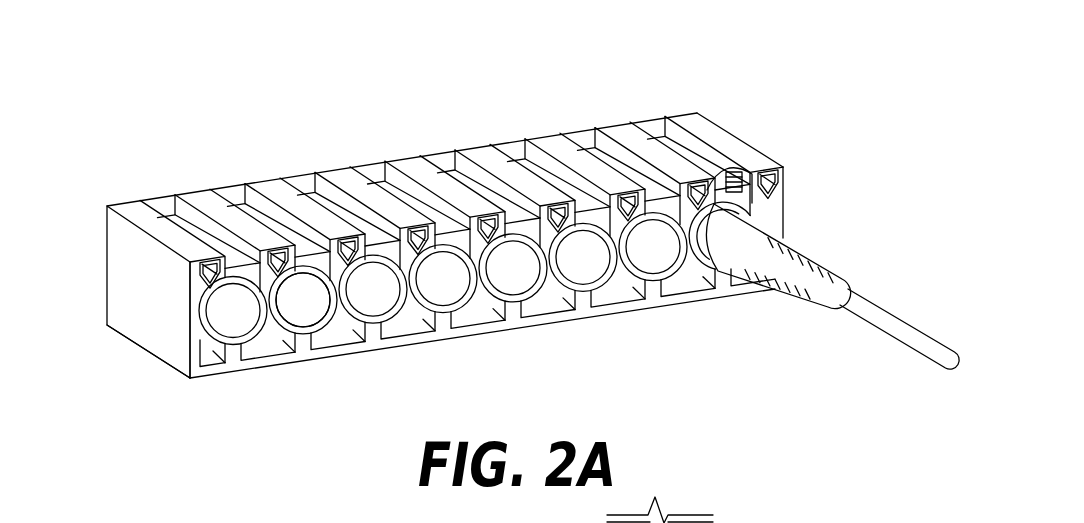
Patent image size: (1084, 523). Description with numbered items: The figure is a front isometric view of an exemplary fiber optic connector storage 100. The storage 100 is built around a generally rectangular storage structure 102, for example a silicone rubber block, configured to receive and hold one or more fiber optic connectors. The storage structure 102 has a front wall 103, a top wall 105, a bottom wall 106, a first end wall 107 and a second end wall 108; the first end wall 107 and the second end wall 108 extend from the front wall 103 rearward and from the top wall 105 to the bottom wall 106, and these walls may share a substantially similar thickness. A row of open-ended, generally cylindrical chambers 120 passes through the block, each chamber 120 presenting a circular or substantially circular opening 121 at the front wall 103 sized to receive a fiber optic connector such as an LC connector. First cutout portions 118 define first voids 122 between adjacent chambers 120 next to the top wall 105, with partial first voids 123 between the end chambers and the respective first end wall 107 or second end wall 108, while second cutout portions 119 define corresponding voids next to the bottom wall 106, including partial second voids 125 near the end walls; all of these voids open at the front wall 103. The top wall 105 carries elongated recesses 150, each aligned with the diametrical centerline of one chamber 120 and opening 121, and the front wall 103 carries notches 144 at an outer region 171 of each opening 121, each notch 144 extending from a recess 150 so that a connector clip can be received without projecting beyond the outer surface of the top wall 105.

The fiber optic connector storage 100 is at (610, 80).
The storage structure 102 is at (105, 213).
The front wall 103 is at (287, 367).
The top wall 105 is at (200, 200).
The bottom wall 106 is at (187, 386).
The first end wall 107 is at (113, 334).
The second end wall 108 is at (728, 133).
The first cutout portion 118 is at (331, 248).
The second cutout portion 119 is at (408, 288).
The chamber 120 is at (290, 313).
The opening 121 is at (220, 333).
The first void 122 is at (262, 257).
The partial first void 123 is at (203, 262).
The partial second void 125 is at (213, 380).
The notch 144 is at (372, 240).
The elongated recess 150 is at (720, 158).
The outer region 171 is at (489, 240).